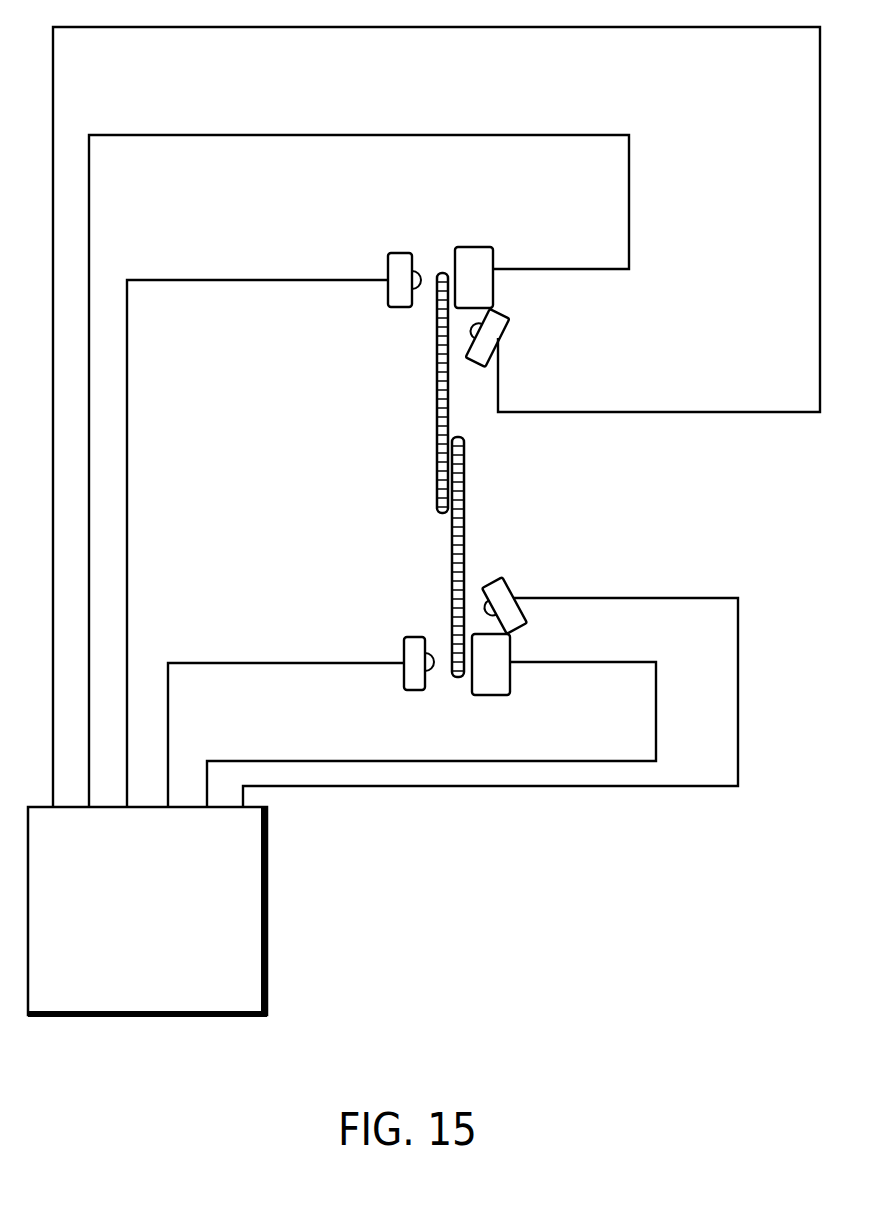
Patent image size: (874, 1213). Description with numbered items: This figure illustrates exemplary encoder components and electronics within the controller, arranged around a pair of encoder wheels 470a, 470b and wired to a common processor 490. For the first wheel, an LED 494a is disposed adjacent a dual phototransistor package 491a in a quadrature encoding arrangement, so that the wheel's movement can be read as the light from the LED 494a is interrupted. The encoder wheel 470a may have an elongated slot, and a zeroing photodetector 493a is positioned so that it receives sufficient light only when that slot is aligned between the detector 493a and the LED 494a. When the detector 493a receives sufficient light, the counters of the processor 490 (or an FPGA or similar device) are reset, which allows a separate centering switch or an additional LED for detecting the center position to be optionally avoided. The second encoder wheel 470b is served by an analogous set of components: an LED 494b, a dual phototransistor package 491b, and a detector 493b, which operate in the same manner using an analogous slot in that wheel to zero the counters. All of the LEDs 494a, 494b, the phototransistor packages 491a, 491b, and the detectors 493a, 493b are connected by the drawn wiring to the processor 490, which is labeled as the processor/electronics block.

The processor 490 is at (262, 986).
The encoder wheel 470a is at (468, 495).
The encoder strip 470b is at (437, 437).
The dual phototransistor package 491a is at (505, 684).
The sensor 491b is at (473, 249).
The zeroing photodetector 493a is at (503, 587).
The detector 493b is at (510, 321).
The LED 494a is at (410, 683).
The LED 494b is at (389, 262).